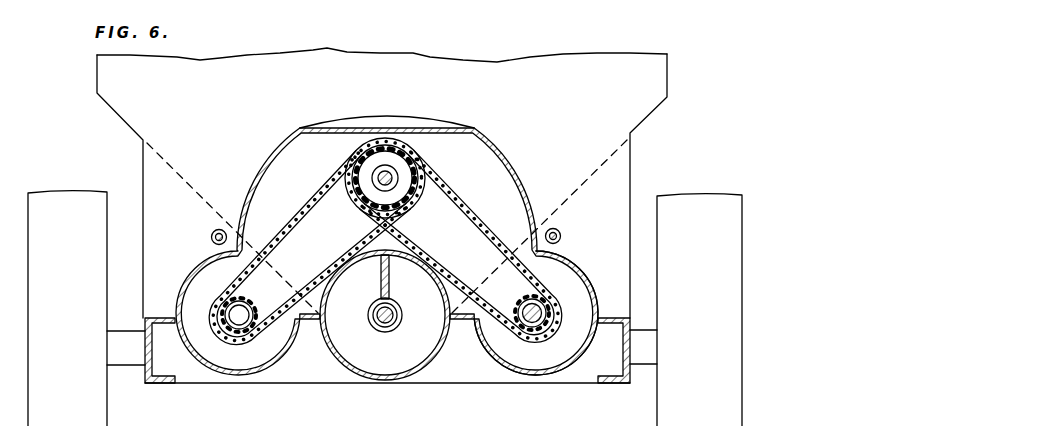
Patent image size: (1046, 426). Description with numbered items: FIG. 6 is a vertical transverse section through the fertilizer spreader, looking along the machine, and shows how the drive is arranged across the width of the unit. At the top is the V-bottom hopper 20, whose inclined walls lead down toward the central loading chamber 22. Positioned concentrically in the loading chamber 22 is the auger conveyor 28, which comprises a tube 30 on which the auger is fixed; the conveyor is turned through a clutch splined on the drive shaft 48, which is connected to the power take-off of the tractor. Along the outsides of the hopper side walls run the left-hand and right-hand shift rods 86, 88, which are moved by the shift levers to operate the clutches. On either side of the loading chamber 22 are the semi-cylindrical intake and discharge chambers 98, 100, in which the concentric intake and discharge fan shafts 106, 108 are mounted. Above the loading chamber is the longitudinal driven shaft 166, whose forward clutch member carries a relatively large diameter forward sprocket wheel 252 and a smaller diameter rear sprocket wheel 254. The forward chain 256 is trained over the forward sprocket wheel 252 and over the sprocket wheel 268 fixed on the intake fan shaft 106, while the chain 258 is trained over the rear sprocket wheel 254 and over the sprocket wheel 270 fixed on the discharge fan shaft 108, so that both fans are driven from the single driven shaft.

The V-bottom hopper 20 is at (668, 68).
The loading chamber 22 is at (432, 366).
The auger conveyor 28 is at (395, 318).
The tube 30 is at (368, 314).
The drive shaft 48 is at (380, 324).
The left-hand shift rod 86 is at (211, 236).
The right-hand shift rod 88 is at (561, 235).
The intake chamber 98 is at (183, 277).
The discharge chamber 100 is at (580, 261).
The intake fan shaft 106 is at (237, 328).
The discharge fan shaft 108 is at (528, 335).
The longitudinal driven shaft 166 is at (372, 170).
The forward sprocket wheel 252 is at (414, 167).
The rear sprocket wheel 254 is at (400, 193).
The forward chain 256 is at (297, 235).
The chain 258 is at (461, 204).
The sprocket wheel 268 is at (248, 331).
The sprocket wheel 270 is at (546, 313).